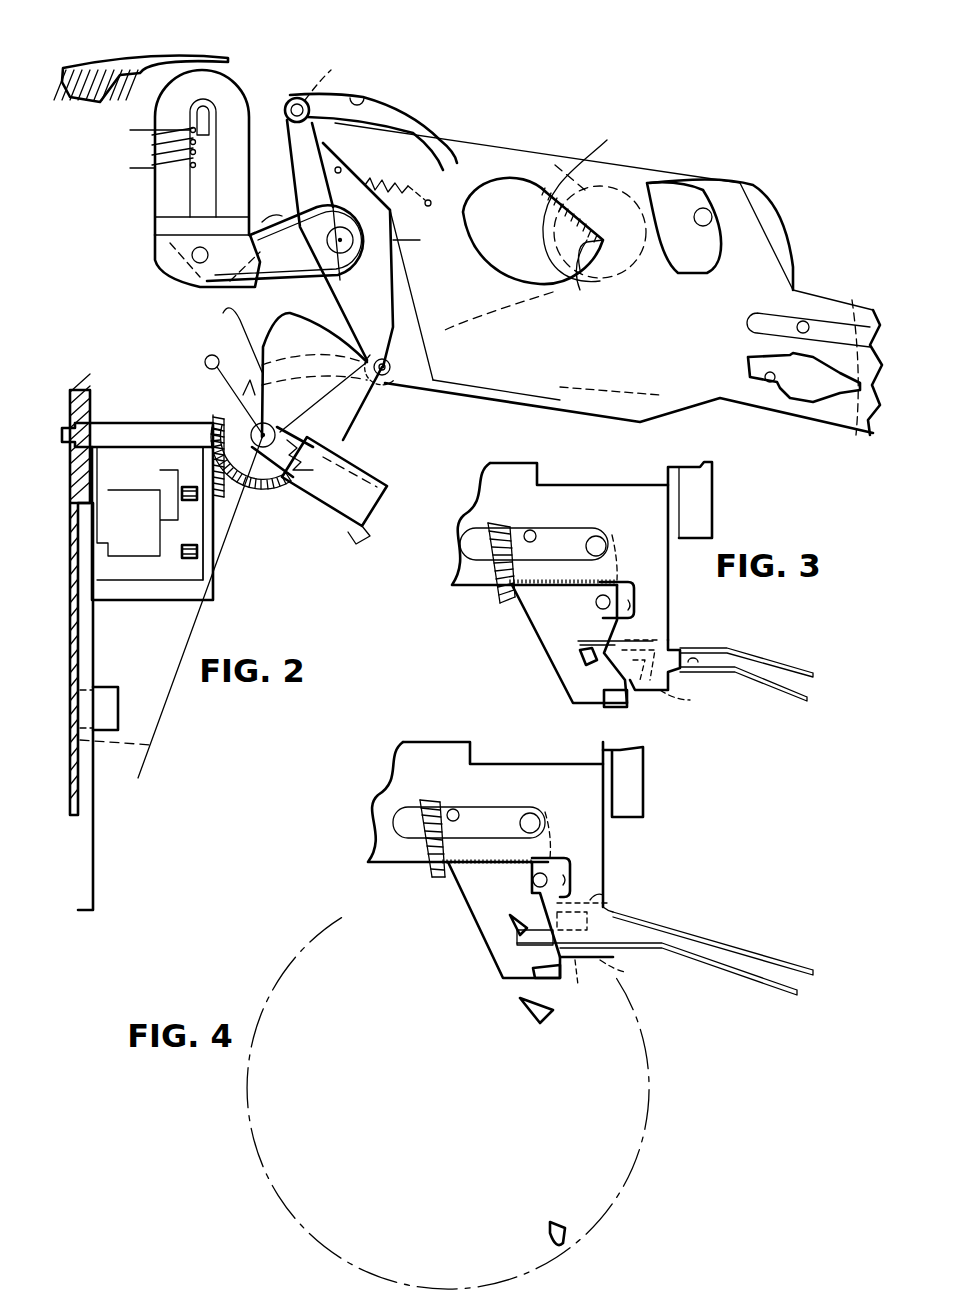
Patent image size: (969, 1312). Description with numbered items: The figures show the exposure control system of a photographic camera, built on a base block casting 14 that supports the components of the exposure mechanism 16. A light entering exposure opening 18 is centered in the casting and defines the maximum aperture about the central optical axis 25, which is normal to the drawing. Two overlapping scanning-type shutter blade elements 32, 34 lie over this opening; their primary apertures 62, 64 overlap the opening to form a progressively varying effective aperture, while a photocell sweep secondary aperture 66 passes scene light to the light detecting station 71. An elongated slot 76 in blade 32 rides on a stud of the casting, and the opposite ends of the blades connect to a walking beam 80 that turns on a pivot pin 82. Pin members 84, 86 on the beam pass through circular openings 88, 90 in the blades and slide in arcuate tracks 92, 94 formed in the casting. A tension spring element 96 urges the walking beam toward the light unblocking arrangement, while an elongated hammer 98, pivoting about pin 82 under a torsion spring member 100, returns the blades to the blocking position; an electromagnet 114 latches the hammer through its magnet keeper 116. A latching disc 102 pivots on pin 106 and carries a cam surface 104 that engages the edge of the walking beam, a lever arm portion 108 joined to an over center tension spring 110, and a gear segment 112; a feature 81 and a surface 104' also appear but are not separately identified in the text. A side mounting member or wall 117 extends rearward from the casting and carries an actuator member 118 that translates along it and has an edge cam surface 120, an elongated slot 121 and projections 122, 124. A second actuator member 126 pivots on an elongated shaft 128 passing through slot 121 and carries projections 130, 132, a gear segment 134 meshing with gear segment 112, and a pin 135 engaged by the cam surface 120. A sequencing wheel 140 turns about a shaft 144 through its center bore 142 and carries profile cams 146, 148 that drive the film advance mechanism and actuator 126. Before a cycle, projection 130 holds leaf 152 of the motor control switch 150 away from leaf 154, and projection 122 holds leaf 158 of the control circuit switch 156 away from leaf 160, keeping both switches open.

In FIG. 2, the base block casting 14 is at (302, 80).
In FIG. 2, the exposure mechanism 16 is at (576, 68).
In FIG. 2, the light entering exposure opening 18 is at (600, 180).
In FIG. 2, the central optical axis 25 is at (582, 280).
In FIG. 2, the shutter blade element 32 is at (505, 150).
In FIG. 2, the shutter blade element 34 is at (428, 390).
In FIG. 2, the scene light admitting primary aperture 62 is at (464, 221).
In FIG. 2, the scene light admitting primary aperture 64 is at (703, 208).
In FIG. 2, the photocell sweep secondary aperture 66 is at (770, 385).
In FIG. 2, the light detecting station 71 is at (858, 310).
In FIG. 2, the elongated slot 76 is at (803, 320).
In FIG. 2, the walking beam 80 is at (288, 179).
In FIG. 2, the plate edge 81 is at (380, 262).
In FIG. 2, the pivot pin 82 is at (300, 252).
In FIG. 2, the pin member 84 is at (292, 98).
In FIG. 2, the pin member 86 is at (388, 380).
In FIG. 2, the circular opening 88 is at (330, 68).
In FIG. 2, the circular opening 90 is at (392, 362).
In FIG. 2, the arcuate track 92 is at (362, 96).
In FIG. 2, the arcuate track 94 is at (298, 375).
In FIG. 2, the tension spring element 96 is at (394, 184).
In FIG. 2, the elongated hammer 98 is at (272, 222).
In FIG. 2, the torsion spring member 100 is at (372, 245).
In FIG. 2, the latching disc 102 is at (247, 387).
In FIG. 2, the cam surface 104 is at (310, 362).
In FIG. 2, the link 104' is at (204, 332).
In FIG. 2, the pivot pin 106 is at (277, 435).
In FIG. 2, the lever arm portion 108 is at (368, 467).
In FIG. 2, the over center tension spring 110 is at (310, 448).
In FIG. 2, the gear segment 112 is at (262, 490).
In FIG. 2, the electromagnet 114 is at (251, 84).
In FIG. 2, the magnet keeper 116 is at (180, 267).
In FIG. 2, the side mounting member 117 is at (92, 410).
In FIG. 3, the actuator member 118 is at (446, 596).
In FIG. 4, the actuator member 118 is at (368, 885).
In FIG. 3, the edge cam surface 120 is at (631, 604).
In FIG. 4, the edge cam surface 120 is at (568, 880).
In FIG. 3, the elongated slot 121 is at (528, 530).
In FIG. 4, the elongated slot 121 is at (452, 808).
In FIG. 3, the projection 122 is at (640, 680).
In FIG. 4, the projection 122 is at (576, 965).
In FIG. 3, the projection 124 is at (668, 695).
In FIG. 4, the projection 124 is at (615, 970).
In FIG. 2, the actuator member 126 is at (226, 572).
In FIG. 3, the actuator member 126 is at (523, 645).
In FIG. 4, the actuator member 126 is at (459, 915).
In FIG. 2, the elongated shaft 128 is at (158, 422).
In FIG. 3, the elongated shaft 128 is at (600, 538).
In FIG. 4, the elongated shaft 128 is at (522, 816).
In FIG. 2, the projection 130 is at (190, 558).
In FIG. 3, the projection 130 is at (586, 666).
In FIG. 4, the projection 130 is at (512, 945).
In FIG. 2, the projection 132 is at (133, 602).
In FIG. 3, the projection 132 is at (610, 708).
In FIG. 4, the projection 132 is at (540, 983).
In FIG. 2, the gear segment 134 is at (222, 480).
In FIG. 3, the gear segment 134 is at (478, 530).
In FIG. 4, the gear segment 134 is at (410, 815).
In FIG. 2, the pin 135 is at (185, 488).
In FIG. 3, the pin 135 is at (595, 605).
In FIG. 4, the pin 135 is at (532, 882).
In FIG. 2, the sequencing wheel 140 is at (108, 884).
In FIG. 4, the sequencing wheel 140 is at (662, 1133).
In FIG. 2, the center bore 142 is at (152, 745).
In FIG. 2, the shaft 144 is at (118, 703).
In FIG. 4, the profile cam 146 is at (550, 1222).
In FIG. 4, the profile cam 148 is at (547, 1023).
In FIG. 4, the motor control switch 150 is at (734, 932).
In FIG. 4, the resilient leaf member 152 is at (605, 898).
In FIG. 4, the resilient leaf member 154 is at (640, 940).
In FIG. 3, the control circuit switch 156 is at (716, 642).
In FIG. 3, the resilient conductive leaf member 158 is at (775, 665).
In FIG. 3, the resilient conductive leaf member 160 is at (790, 695).